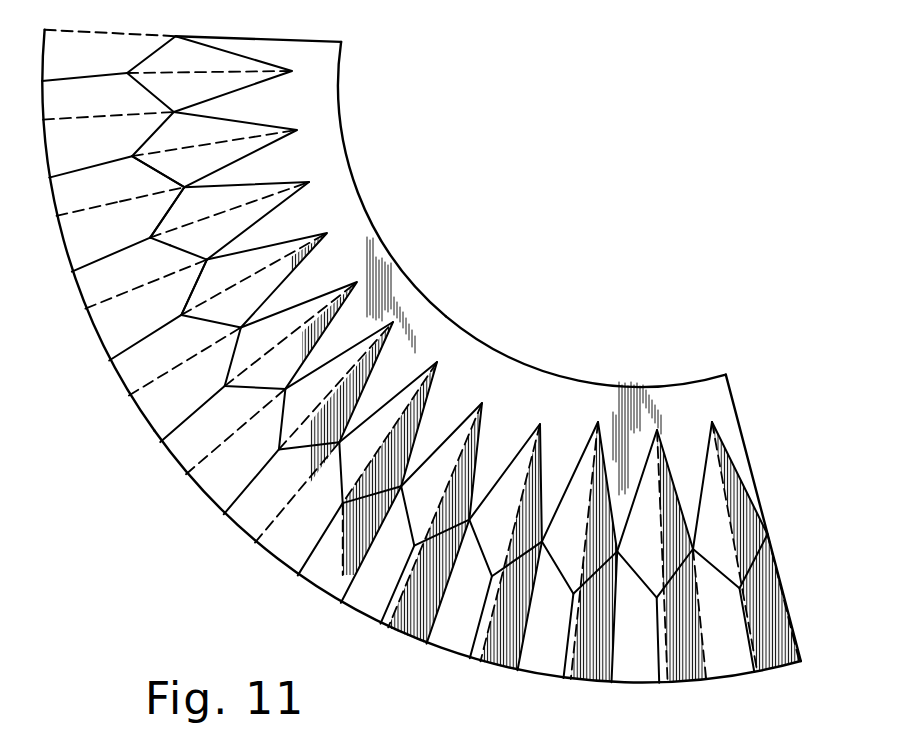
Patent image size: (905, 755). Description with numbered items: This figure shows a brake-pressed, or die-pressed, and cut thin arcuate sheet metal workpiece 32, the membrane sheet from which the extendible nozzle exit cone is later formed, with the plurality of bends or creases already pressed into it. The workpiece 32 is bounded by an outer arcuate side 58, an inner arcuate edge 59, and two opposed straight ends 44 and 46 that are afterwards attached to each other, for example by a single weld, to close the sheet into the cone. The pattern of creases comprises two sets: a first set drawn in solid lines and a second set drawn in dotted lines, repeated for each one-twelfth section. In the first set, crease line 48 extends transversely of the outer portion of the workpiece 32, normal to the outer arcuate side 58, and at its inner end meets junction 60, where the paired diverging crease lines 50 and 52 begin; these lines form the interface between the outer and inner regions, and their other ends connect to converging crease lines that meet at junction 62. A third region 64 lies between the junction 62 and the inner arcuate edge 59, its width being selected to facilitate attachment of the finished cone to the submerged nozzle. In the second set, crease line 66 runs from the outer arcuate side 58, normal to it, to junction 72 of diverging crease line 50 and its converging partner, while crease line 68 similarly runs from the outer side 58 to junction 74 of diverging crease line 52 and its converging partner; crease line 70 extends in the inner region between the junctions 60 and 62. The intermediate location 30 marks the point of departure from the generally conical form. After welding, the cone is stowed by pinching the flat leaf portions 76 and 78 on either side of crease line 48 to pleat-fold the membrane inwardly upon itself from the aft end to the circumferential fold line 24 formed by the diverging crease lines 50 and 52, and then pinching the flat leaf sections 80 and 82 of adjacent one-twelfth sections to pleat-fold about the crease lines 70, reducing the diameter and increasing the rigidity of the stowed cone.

The circumferential fold line 24 is at (752, 560).
The point of departure 30 is at (768, 533).
The workpiece 32 is at (255, 518).
The straight end 44 is at (289, 40).
The straight end 46 is at (755, 468).
The crease line 48 is at (117, 258).
The crease line 50 is at (172, 251).
The crease line 52 is at (165, 221).
The outer arcuate side 58 is at (157, 425).
The inner arcuate edge 59 is at (487, 338).
The junction 60 is at (146, 243).
The junction 62 is at (309, 183).
The third region 64 is at (430, 305).
The crease line 66 is at (162, 283).
The crease line 68 is at (106, 218).
The crease line 70 is at (181, 228).
The junction 72 is at (206, 264).
The junction 74 is at (183, 190).
The flat leaf portion 76 is at (88, 298).
The flat leaf portion 78 is at (66, 226).
The flat leaf section 80 is at (266, 190).
The flat leaf section 82 is at (246, 144).